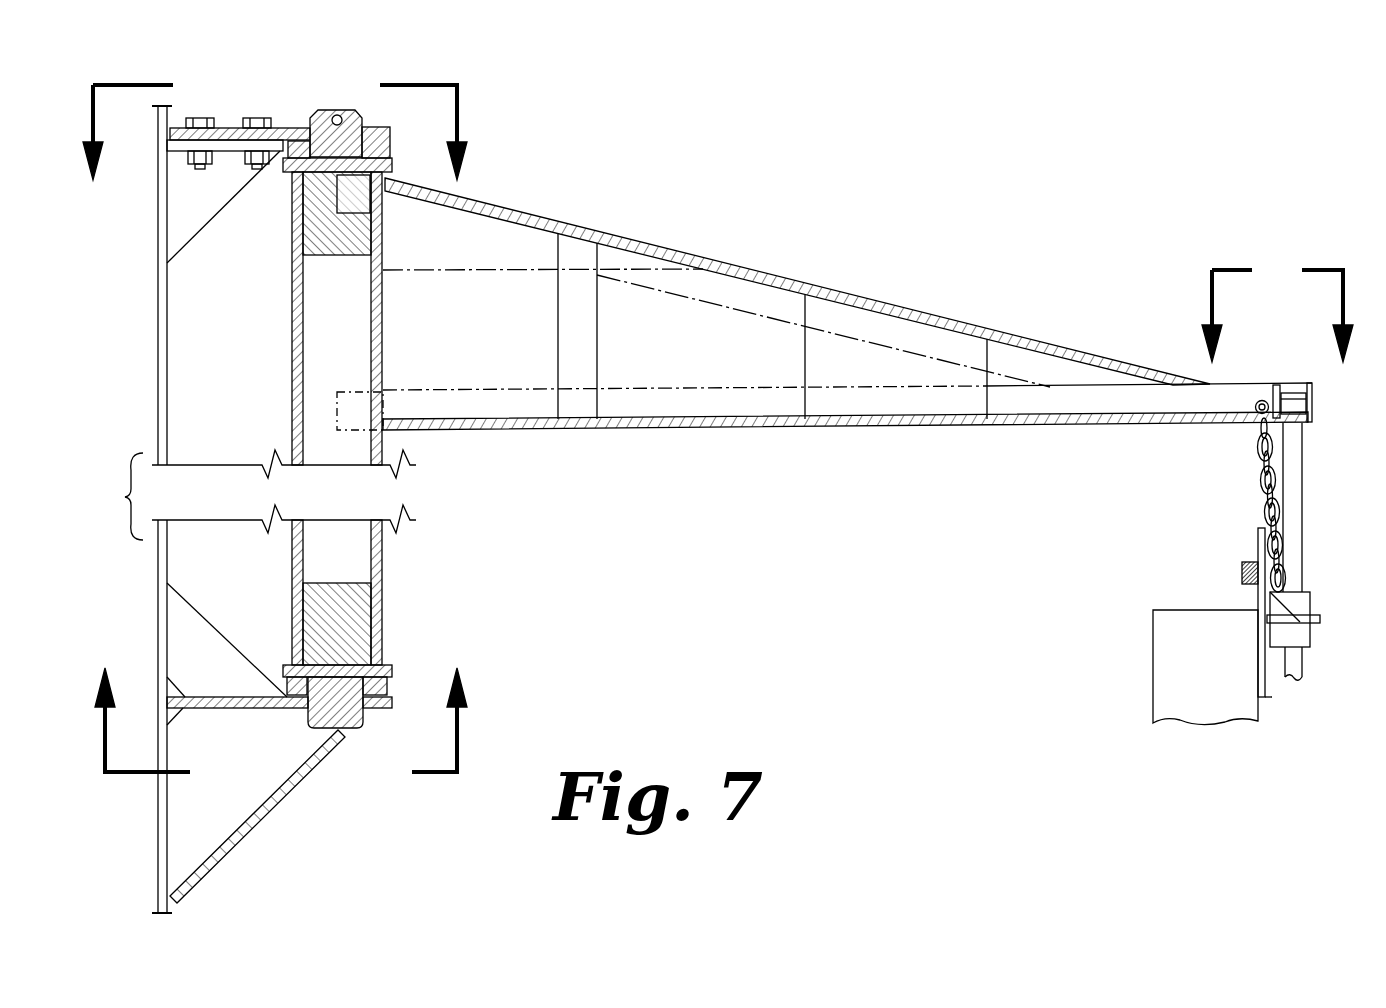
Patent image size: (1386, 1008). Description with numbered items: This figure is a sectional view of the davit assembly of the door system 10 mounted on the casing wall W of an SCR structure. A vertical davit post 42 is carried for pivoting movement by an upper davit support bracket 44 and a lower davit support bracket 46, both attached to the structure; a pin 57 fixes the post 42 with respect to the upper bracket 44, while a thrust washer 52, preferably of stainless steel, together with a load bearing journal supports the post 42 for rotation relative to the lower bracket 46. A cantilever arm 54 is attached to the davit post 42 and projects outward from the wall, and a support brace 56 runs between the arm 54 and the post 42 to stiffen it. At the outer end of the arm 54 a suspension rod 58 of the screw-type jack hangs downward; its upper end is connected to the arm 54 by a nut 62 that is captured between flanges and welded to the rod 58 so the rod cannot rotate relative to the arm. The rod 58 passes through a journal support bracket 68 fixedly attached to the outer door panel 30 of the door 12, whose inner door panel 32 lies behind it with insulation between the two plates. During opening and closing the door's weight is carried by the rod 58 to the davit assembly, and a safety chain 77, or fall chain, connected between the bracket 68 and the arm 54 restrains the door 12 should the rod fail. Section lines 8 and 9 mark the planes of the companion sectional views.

The casing wall W is at (170, 116).
The upper davit support bracket 44 is at (299, 127).
The pin 57 is at (338, 116).
The davit post 42 is at (292, 290).
The thrust washer 52 is at (390, 676).
The lower davit support bracket 46 is at (387, 707).
The support brace 56 is at (905, 310).
The cantilever arm 54 is at (906, 424).
The nut 62 is at (1282, 402).
The safety chain 77 is at (1264, 508).
The suspension rod 58 is at (1299, 497).
The journal support bracket 68 is at (1318, 616).
The inner door panel 32 is at (1153, 627).
The outer door panel 30 is at (1270, 708).
The door 12 is at (1287, 700).
The section line 8- 8 is at (1277, 318).
The section line 9- 9 is at (275, 133).
The door system 10 is at (281, 720).